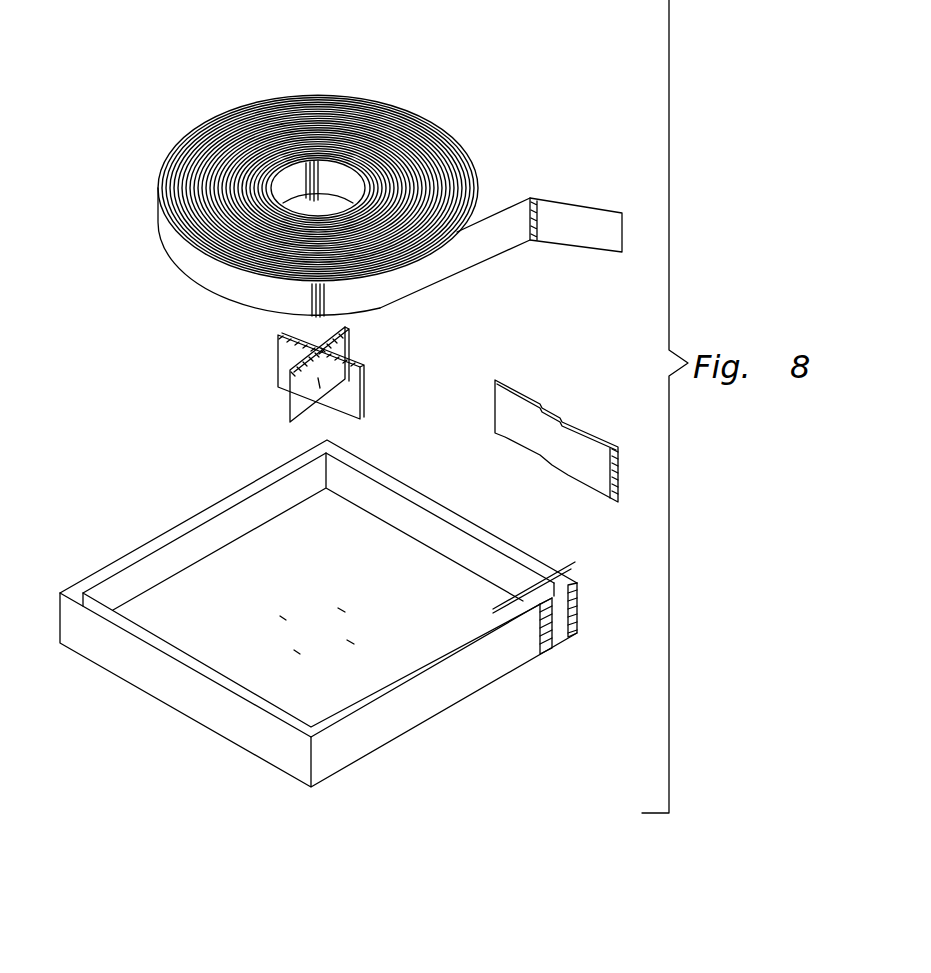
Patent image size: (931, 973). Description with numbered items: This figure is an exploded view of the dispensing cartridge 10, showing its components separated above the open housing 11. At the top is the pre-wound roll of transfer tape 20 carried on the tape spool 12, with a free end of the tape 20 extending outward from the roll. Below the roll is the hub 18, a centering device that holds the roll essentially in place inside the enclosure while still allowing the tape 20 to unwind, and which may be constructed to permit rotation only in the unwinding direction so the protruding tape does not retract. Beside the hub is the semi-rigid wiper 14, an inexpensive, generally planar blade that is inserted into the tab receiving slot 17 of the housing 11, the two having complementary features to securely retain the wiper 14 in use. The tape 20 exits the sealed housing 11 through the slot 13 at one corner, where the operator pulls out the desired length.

The dispensing cartridge 10 is at (155, 740).
The housing 11 is at (393, 737).
The tape spool 12 is at (380, 110).
The slot 13 is at (550, 648).
The semi-rigid wiper 14 is at (603, 432).
The tab receiving slot 17 is at (520, 560).
The hub 18 is at (278, 363).
The transfer tape 20 is at (285, 100).